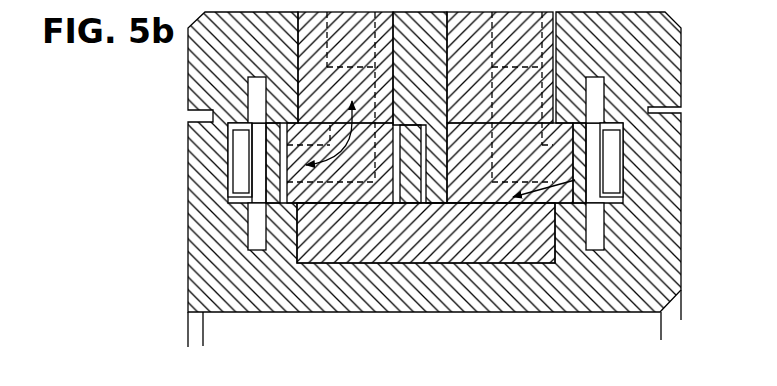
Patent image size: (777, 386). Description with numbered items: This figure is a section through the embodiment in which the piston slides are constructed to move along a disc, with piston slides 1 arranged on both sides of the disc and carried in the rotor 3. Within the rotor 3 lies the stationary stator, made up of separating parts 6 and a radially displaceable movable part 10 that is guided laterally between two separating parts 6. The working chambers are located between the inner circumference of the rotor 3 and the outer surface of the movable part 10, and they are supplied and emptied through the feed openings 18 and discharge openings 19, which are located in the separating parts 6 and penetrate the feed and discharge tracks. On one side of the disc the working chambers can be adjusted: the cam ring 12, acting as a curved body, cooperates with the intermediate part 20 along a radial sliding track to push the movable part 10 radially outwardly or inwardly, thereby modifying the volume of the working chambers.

The piston slide 1 is at (612, 200).
The rotor 3 is at (205, 71).
The separating part 6 is at (557, 181).
The movable part 10 is at (397, 178).
The cam ring 12 is at (435, 107).
The feed opening 18 is at (323, 157).
The discharge opening 19 is at (323, 157).
The intermediate part 20 is at (312, 196).